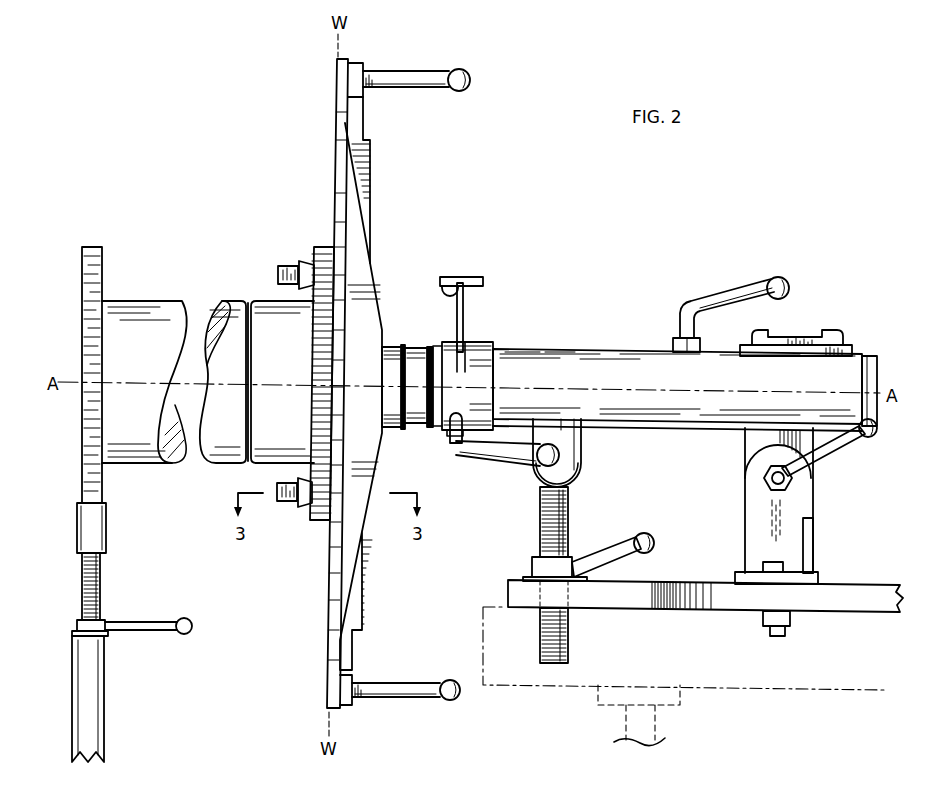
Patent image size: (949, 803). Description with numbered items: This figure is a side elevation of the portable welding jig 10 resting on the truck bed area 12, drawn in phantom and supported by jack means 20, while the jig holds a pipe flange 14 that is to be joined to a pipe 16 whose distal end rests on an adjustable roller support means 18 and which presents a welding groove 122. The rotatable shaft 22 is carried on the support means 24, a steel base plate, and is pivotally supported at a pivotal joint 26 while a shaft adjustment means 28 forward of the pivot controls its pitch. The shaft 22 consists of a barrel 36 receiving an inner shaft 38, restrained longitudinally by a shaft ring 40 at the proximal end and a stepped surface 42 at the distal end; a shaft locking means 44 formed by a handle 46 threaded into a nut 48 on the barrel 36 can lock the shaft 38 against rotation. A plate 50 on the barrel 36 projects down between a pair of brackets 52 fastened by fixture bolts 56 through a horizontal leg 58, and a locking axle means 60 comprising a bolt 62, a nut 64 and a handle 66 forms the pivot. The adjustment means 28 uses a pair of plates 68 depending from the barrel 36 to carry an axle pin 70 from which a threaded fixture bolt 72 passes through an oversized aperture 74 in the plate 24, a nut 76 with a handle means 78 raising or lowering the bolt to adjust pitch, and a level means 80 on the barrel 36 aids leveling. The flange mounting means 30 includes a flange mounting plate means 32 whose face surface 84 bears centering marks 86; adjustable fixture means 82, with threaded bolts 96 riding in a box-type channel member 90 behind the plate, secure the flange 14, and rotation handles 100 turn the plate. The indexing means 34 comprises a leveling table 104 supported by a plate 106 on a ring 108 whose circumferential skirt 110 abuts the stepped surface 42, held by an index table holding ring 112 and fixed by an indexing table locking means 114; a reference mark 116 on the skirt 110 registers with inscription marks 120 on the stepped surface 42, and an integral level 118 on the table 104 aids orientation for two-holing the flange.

The welding jig 10 is at (568, 243).
The bed area 12 is at (758, 690).
The pipe flange 14 is at (306, 243).
The pipe 16 is at (150, 290).
The roller support means 18 is at (117, 529).
The jack means 20 is at (656, 727).
The rotatable shaft 22 is at (711, 395).
The support means 24 is at (631, 603).
The pivotal joint 26 is at (825, 523).
The shaft adjustment means 28 is at (545, 541).
The flange mounting means 30 is at (360, 383).
The flange mounting plate means 32 is at (309, 383).
The indexing means 34 is at (465, 341).
The barrel 36 is at (690, 420).
The shaft 38 is at (417, 439).
The shaft ring 40 is at (876, 376).
The stepped surface 42 is at (404, 360).
The shaft locking means 44 is at (732, 292).
The handle 46 is at (737, 293).
The nut 48 is at (675, 340).
The plate 50 is at (744, 446).
The brackets 52 is at (794, 535).
The fixture bolts 56 is at (790, 618).
The horizontal leg 58 is at (818, 579).
The locking axle means 60 is at (843, 455).
The bolt 62 is at (814, 494).
The nut 64 is at (787, 489).
The handle 66 is at (853, 448).
The plates 68 is at (580, 440).
The axle pin 70 is at (583, 462).
The fixture bolt 72 is at (543, 527).
The oversized aperture 74 is at (537, 591).
The nut 76 is at (532, 565).
The handle means 78 is at (614, 546).
The level means 80 is at (832, 318).
The adjustable fixture means 82 is at (272, 251).
The face surface 84 is at (328, 613).
The centering marks 86 is at (336, 166).
The box-type channel member 90 is at (372, 166).
The threaded bolt 96 is at (284, 276).
The rotation handles 100 is at (428, 86).
The leveling table 104 is at (460, 279).
The plate 106 is at (464, 304).
The ring 108 is at (475, 343).
The circumferential skirt 110 is at (432, 432).
The index table holding ring 112 is at (542, 349).
The indexing table locking means 114 is at (490, 456).
The reference mark 116 is at (463, 364).
The integral level 118 is at (444, 291).
The inscription marks 120 is at (429, 349).
The welding groove 122 is at (250, 303).